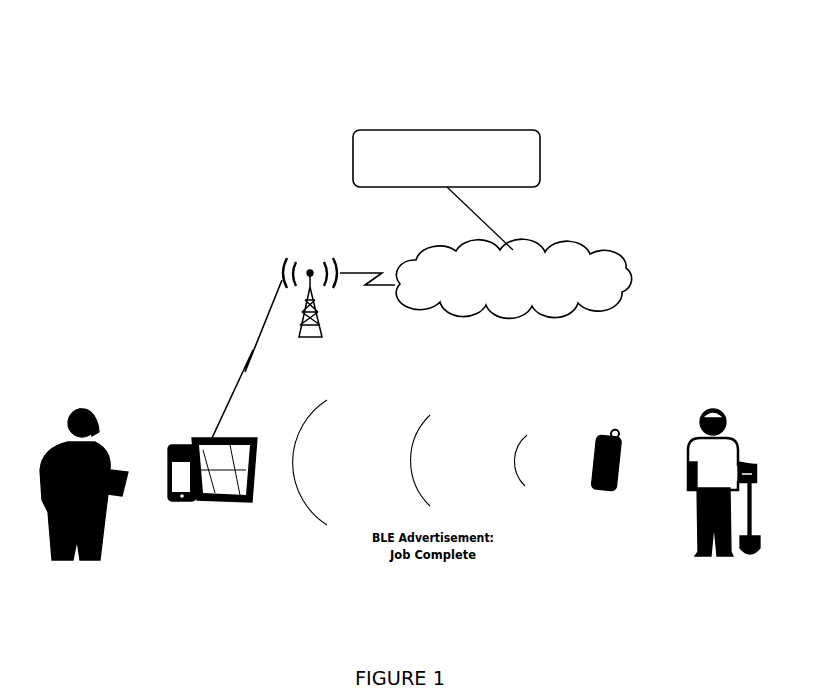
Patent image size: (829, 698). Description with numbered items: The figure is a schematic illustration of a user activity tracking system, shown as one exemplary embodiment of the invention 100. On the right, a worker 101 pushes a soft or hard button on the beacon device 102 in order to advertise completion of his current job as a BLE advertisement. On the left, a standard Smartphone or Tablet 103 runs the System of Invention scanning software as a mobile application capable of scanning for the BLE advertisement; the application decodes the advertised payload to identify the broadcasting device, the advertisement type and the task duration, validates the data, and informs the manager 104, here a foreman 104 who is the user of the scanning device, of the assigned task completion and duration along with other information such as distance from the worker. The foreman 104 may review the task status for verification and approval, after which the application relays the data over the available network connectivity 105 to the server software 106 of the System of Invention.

The user activity tracking system 100 is at (712, 71).
The worker 101 is at (722, 400).
The beacon device 102 is at (608, 422).
The Smartphone or Tablet 103 is at (188, 435).
The manager (foreman) 104 is at (82, 402).
The network connectivity 105 is at (610, 253).
The server software 106 is at (524, 124).